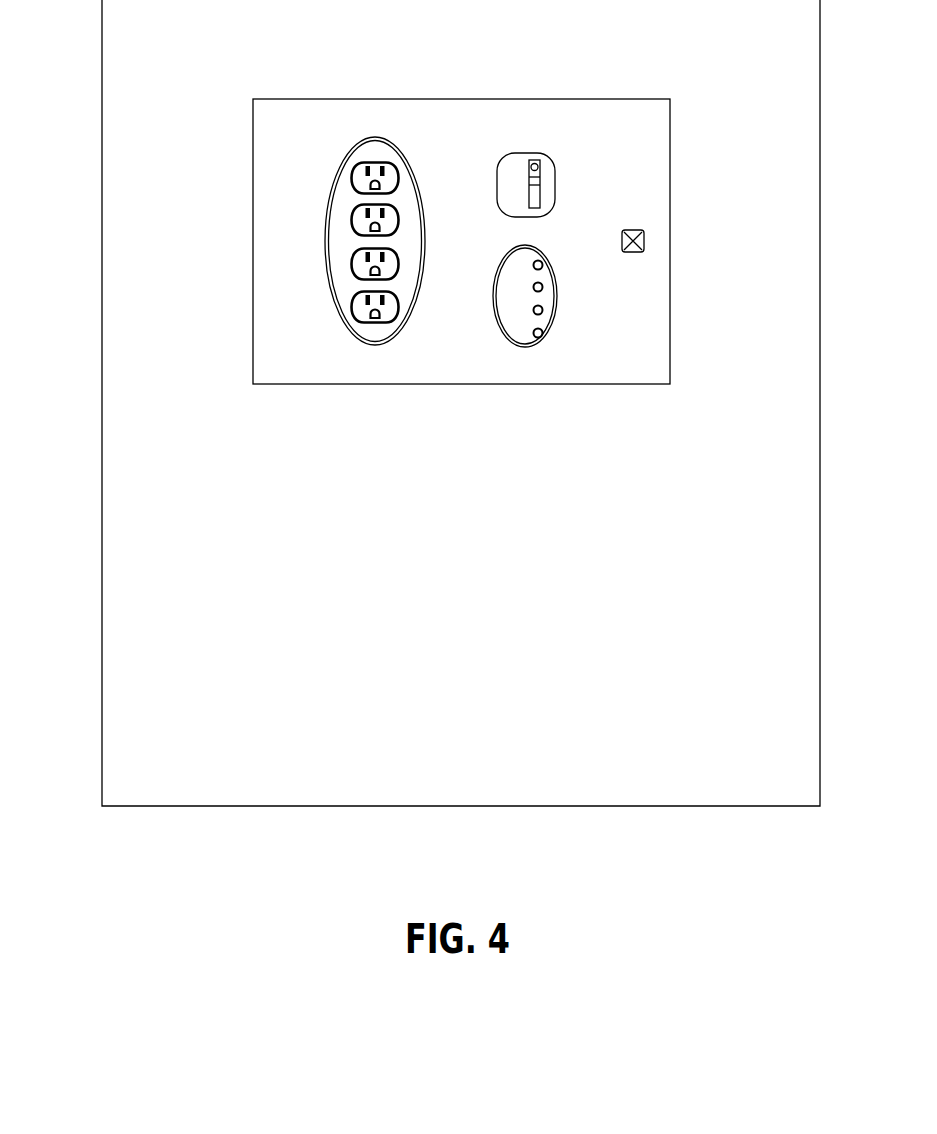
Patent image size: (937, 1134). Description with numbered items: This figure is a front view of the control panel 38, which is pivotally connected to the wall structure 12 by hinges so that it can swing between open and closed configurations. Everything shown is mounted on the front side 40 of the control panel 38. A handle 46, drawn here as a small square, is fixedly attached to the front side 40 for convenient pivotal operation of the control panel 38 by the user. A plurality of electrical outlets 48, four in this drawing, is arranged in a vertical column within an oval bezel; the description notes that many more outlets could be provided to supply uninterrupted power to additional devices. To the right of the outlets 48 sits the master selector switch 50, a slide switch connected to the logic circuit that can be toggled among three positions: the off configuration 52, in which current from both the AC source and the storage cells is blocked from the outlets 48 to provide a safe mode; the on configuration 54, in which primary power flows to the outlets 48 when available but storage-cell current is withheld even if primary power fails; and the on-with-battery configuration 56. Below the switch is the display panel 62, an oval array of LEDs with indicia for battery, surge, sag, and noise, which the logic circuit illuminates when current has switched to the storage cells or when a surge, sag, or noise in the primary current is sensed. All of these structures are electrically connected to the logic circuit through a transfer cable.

The wall structure 12 is at (122, 432).
The control panel 38 is at (499, 241).
The front side 40 is at (470, 366).
The handle 46 is at (626, 232).
The electrical outlets 48 is at (352, 236).
The master selector switch 50 is at (538, 163).
The off configuration 52 is at (514, 200).
The on configuration 54 is at (510, 183).
The on-with-battery configuration 56 is at (503, 165).
The display panel 62 is at (555, 296).